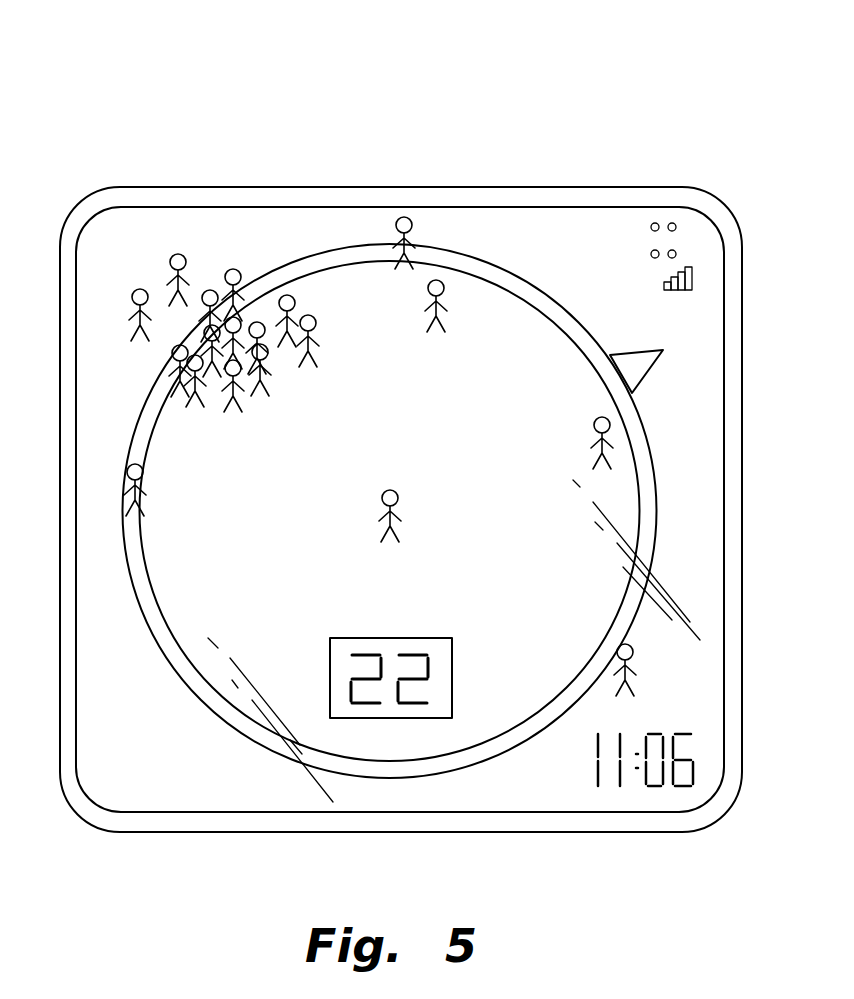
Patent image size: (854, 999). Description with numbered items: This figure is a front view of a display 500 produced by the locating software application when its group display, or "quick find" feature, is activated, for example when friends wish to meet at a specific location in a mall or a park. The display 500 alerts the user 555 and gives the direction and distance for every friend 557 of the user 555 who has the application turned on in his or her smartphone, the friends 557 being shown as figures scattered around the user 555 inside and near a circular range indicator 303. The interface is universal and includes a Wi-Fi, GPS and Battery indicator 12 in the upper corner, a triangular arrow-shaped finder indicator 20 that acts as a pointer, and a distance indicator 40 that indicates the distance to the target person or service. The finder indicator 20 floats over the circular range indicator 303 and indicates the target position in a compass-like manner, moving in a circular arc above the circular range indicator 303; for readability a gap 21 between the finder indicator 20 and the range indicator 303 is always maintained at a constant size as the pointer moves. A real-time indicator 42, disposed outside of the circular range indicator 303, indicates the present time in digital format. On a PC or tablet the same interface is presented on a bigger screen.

The display 500 is at (398, 96).
The Wi-Fi, GPS and Battery indicator 12 is at (698, 225).
The circular range indicator 303 is at (492, 276).
The triangular arrow-shaped finder indicator 20 is at (657, 365).
The gap 21 is at (642, 409).
The friend 557 is at (143, 494).
The user 555 is at (395, 534).
The distance indicator 40 is at (376, 738).
The real-time indicator 42 is at (568, 773).